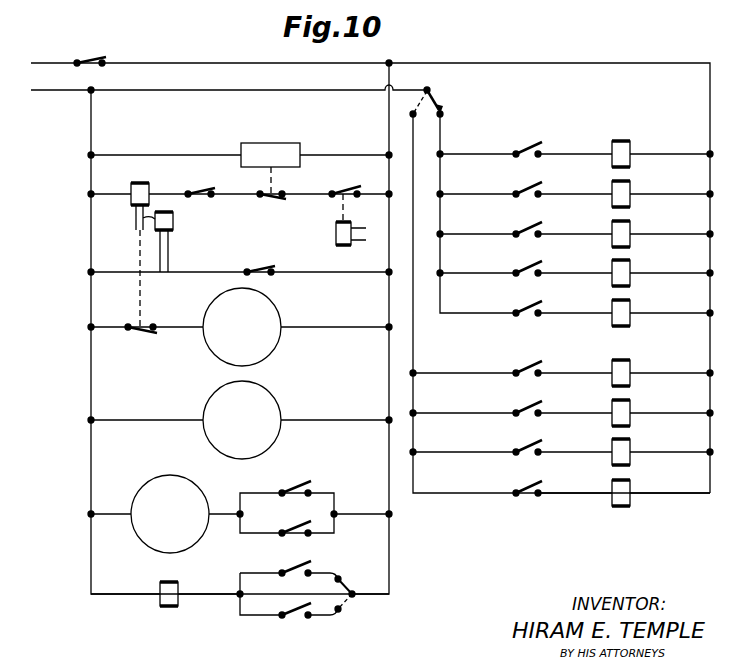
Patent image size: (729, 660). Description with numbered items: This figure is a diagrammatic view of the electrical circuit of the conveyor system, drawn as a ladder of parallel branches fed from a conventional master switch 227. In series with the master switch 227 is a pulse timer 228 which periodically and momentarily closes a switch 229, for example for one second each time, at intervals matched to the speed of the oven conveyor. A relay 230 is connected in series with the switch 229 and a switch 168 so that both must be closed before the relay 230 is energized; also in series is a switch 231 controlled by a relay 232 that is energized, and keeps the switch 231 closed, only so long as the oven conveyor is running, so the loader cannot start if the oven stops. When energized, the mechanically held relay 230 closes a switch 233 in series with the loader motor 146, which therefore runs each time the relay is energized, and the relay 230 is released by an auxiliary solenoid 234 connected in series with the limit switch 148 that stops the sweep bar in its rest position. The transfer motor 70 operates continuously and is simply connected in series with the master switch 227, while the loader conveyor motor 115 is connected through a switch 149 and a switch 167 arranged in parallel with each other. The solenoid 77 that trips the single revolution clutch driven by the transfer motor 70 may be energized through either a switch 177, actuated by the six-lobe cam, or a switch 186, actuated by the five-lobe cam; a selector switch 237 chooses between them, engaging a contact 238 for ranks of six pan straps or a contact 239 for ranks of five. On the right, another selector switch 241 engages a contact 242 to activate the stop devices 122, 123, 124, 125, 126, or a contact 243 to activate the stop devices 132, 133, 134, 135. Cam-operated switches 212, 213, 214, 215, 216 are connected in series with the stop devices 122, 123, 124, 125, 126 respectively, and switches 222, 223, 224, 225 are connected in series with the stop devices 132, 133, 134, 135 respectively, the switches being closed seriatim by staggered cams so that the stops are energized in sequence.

The master switch 227 is at (88, 61).
The pulse timer 228 is at (262, 143).
The relay 230 is at (140, 183).
The switch 168 is at (202, 191).
The switch 229 is at (266, 198).
The switch 231 is at (343, 190).
The auxiliary solenoid 234 is at (175, 221).
The relay 232 is at (338, 246).
The limit switch 148 is at (259, 268).
The switch 233 is at (137, 330).
The loader motor 146 is at (278, 314).
The transfer motor 70 is at (278, 403).
The loader conveyor motor 115 is at (152, 480).
The switch 149 is at (292, 488).
The switch 167 is at (289, 527).
The switch 177 is at (289, 567).
The switch 186 is at (289, 609).
The contact 238 is at (337, 575).
The selector switch 237 is at (345, 588).
The contact 239 is at (339, 613).
The solenoid 77 is at (164, 607).
The selector switch 241 is at (437, 91).
The contact 242 is at (444, 115).
The contact 243 is at (412, 115).
The switch 212 is at (526, 148).
The switch 213 is at (526, 188).
The switch 214 is at (526, 228).
The switch 215 is at (526, 267).
The switch 216 is at (526, 307).
The switch 222 is at (526, 367).
The switch 223 is at (526, 407).
The switch 224 is at (526, 446).
The switch 225 is at (526, 487).
The stop device 122 is at (630, 142).
The stop device 123 is at (630, 182).
The stop device 124 is at (630, 222).
The stop device 125 is at (630, 261).
The stop device 126 is at (630, 301).
The stop device 132 is at (630, 361).
The stop device 133 is at (630, 401).
The stop device 134 is at (630, 440).
The stop device 135 is at (630, 481).